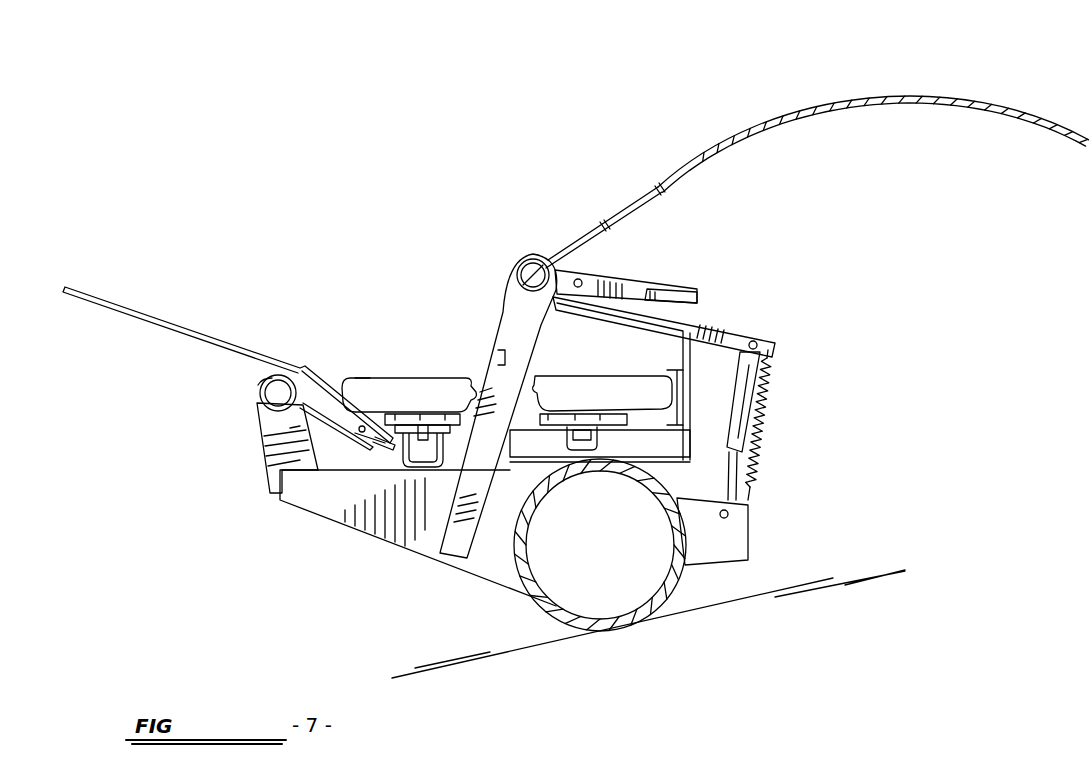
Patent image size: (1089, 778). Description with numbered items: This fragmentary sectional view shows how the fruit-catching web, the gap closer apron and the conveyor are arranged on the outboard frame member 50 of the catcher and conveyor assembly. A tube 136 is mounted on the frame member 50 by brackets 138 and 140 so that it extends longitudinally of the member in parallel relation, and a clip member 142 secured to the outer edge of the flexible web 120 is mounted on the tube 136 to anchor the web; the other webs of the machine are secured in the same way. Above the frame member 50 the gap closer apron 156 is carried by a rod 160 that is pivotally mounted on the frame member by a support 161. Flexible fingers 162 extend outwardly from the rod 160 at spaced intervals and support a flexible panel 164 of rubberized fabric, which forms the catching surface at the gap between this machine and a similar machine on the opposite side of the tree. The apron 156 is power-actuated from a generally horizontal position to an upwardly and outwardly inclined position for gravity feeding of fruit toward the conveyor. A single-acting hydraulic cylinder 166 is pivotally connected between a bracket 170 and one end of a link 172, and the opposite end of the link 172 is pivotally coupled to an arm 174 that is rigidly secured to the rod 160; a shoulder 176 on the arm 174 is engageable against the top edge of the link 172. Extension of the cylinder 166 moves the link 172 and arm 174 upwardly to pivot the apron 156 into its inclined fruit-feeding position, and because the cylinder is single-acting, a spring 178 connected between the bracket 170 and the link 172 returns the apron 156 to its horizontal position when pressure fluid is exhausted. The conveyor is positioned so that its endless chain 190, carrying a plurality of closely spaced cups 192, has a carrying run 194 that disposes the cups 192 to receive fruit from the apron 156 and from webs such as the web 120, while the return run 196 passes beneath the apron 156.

The outboard frame member 50 is at (666, 602).
The flexible web 120 is at (176, 326).
The tube 136 is at (258, 392).
The bracket 138 is at (386, 536).
The bracket 140 is at (258, 446).
The clip member 142 is at (352, 428).
The gap closer apron 156 is at (963, 91).
The rod 160 is at (525, 262).
The support 161 is at (495, 370).
The flexible finger 162 is at (622, 206).
The flexible panel 164 is at (693, 164).
The hydraulic cylinder 166 is at (753, 394).
The bracket 170 is at (740, 518).
The link 172 is at (722, 326).
The arm 174 is at (634, 282).
The shoulder 176 is at (688, 286).
The spring 178 is at (761, 451).
The endless chain 190 is at (404, 460).
The cup 192 is at (557, 372).
The carrying run 194 is at (373, 371).
The return run 196 is at (605, 372).